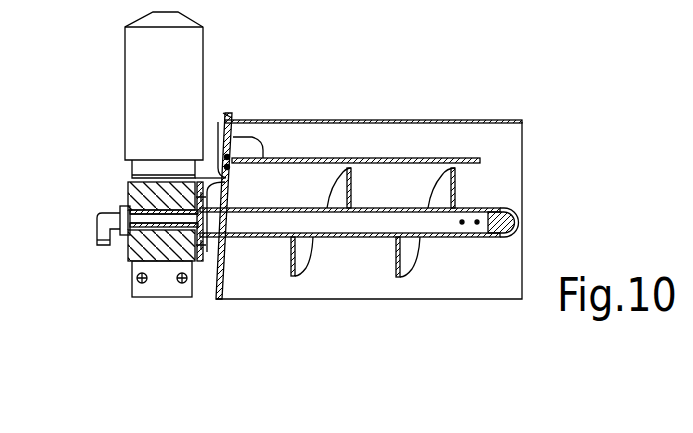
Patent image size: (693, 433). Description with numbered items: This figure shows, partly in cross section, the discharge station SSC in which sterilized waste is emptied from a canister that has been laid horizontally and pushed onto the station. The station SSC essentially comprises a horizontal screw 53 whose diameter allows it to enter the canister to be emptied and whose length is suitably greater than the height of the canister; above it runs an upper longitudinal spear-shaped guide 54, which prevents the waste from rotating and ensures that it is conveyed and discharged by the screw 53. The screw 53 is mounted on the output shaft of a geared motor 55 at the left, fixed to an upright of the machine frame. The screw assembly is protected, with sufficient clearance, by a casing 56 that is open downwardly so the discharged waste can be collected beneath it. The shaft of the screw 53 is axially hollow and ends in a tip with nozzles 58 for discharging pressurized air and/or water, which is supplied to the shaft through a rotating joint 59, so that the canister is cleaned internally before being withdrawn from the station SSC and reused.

The horizontal screw 53 is at (457, 188).
The upper longitudinal spear-shaped guide 54 is at (385, 160).
The geared motor 55 is at (124, 88).
The casing 56 is at (302, 121).
The tip with nozzles 58 is at (507, 216).
The rotating joint 59 is at (103, 213).
The discharge station SSC is at (468, 100).